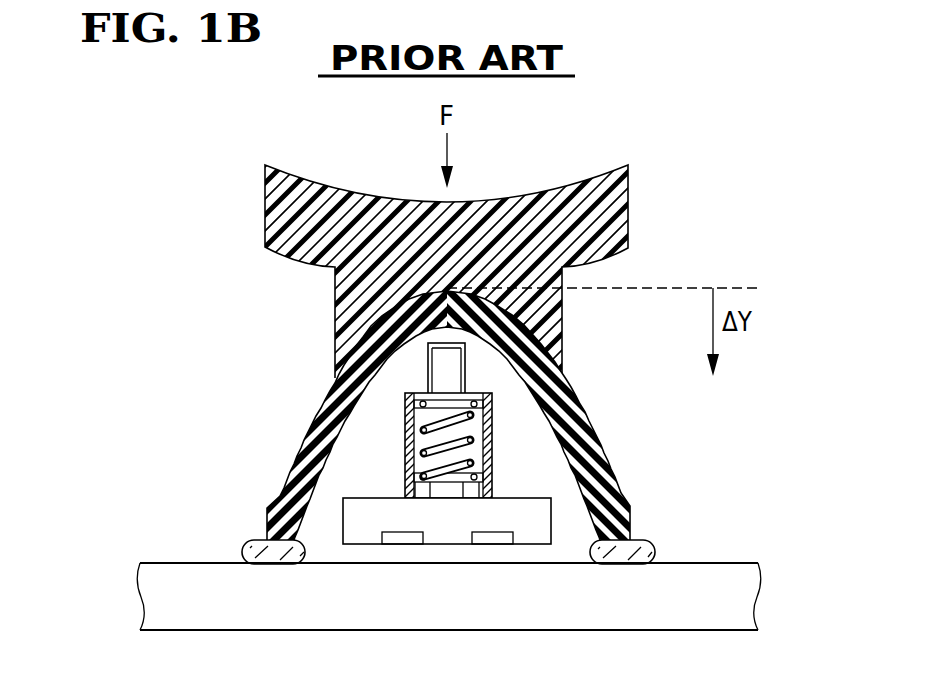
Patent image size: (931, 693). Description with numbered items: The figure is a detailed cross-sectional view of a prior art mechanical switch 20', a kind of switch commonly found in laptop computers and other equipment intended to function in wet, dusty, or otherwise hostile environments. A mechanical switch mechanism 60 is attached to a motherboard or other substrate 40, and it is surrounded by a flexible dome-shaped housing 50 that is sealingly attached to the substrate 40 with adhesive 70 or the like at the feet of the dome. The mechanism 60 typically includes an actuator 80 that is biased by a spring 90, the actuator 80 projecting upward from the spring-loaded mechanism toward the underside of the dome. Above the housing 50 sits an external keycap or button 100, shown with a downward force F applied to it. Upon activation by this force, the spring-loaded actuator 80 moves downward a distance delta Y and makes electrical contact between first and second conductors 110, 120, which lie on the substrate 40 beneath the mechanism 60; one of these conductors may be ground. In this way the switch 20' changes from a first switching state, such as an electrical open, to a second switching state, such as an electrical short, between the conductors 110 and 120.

The prior art mechanical switch 20' is at (449, 346).
The external keycap or button 100 is at (603, 172).
The flexible dome-shaped housing 50 is at (585, 413).
The mechanical switch mechanism 60 is at (385, 416).
The adhesive 70 is at (254, 542).
The actuator 80 is at (466, 353).
The spring 90 is at (478, 449).
The motherboard or other substrate 40 is at (170, 562).
The first conductor 110 is at (400, 544).
The second conductor 120 is at (497, 544).